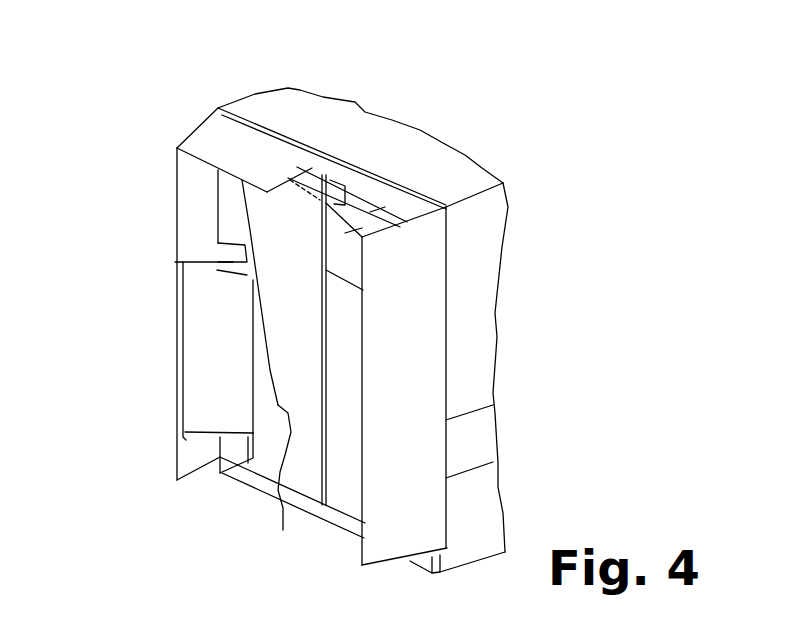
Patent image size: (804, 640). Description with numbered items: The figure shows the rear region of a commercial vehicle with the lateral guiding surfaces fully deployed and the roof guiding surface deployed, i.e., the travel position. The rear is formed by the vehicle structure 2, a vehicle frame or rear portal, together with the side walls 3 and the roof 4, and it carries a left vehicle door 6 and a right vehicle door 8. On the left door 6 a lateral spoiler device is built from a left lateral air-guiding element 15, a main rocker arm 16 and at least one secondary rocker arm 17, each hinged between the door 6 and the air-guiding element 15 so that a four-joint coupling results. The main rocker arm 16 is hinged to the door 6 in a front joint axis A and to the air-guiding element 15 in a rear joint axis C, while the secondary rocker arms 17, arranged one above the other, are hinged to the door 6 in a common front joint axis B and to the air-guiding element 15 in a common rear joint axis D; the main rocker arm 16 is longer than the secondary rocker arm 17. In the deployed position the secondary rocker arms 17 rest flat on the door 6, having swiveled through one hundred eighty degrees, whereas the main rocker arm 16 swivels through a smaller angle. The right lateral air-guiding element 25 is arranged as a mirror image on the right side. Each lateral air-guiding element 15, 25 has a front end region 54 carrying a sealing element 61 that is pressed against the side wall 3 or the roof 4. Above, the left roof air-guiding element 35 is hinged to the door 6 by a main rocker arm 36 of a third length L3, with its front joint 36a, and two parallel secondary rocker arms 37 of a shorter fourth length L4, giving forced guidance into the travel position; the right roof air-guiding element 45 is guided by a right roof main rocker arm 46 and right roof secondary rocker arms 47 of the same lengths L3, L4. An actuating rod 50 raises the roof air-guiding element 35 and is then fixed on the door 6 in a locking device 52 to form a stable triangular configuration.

The vehicle structure 2 is at (334, 450).
The side wall 3 is at (480, 378).
The roof 4 is at (372, 135).
The left vehicle door 6 is at (299, 401).
The right vehicle door 8 is at (344, 421).
The left lateral air-guiding element 15 is at (165, 292).
The main rocker arm 16 is at (158, 351).
The secondary rocker arm 17 is at (167, 283).
The right lateral air-guiding element 25 is at (455, 386).
The left roof air-guiding element 35 is at (310, 129).
The main rocker arm 36 is at (283, 113).
The front joint 36a is at (300, 101).
The secondary rocker arm 37 is at (347, 129).
The right roof air-guiding element 45 is at (407, 154).
The right roof main rocker arm 46 is at (445, 143).
The right roof secondary rocker arm 47 is at (369, 121).
The actuating rod 50 is at (177, 338).
The locking device 52 is at (292, 527).
The front end region 54 is at (499, 411).
The sealing element 61 is at (539, 471).
The front joint axis A is at (253, 491).
The front joint axis B is at (180, 223).
The rear joint axis C is at (193, 453).
The rear joint axis D is at (176, 258).
The third length L3 is at (618, 171).
The fourth length L4 is at (649, 137).